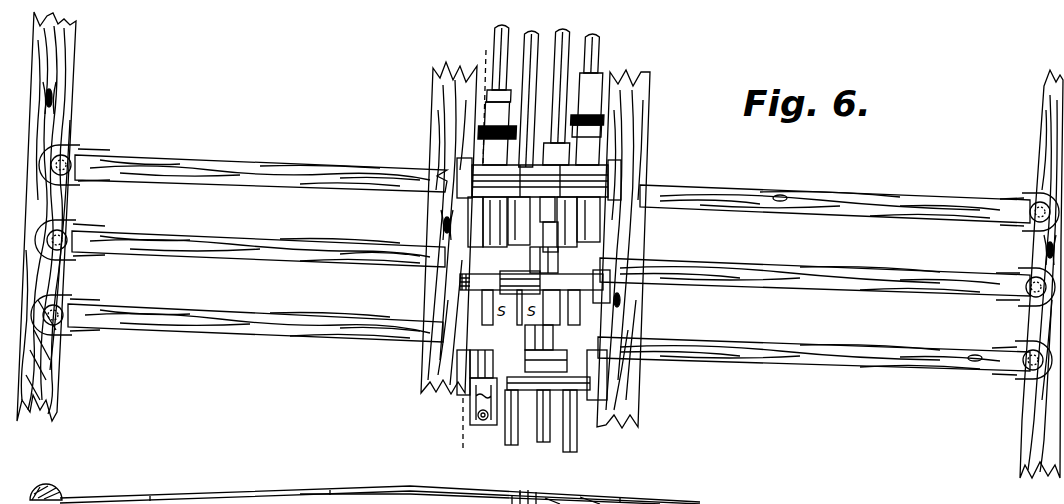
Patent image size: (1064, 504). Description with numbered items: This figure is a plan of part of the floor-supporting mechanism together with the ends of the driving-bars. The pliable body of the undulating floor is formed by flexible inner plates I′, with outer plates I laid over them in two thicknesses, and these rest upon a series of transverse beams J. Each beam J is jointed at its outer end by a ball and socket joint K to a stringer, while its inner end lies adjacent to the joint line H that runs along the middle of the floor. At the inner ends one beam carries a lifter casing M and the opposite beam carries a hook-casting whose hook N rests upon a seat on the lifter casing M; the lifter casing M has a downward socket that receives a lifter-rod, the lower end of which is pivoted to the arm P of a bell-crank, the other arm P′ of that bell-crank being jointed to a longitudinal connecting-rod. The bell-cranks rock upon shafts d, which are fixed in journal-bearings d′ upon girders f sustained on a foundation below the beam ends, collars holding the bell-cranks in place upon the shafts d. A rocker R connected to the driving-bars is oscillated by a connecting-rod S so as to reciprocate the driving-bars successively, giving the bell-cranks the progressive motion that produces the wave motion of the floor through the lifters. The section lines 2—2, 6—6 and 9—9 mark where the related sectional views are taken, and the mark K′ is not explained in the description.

The ball and socket joint K is at (78, 156).
The transverse beam J is at (216, 162).
The girder f is at (433, 120).
The connecting-rod S is at (568, 63).
The section line 2 is at (472, 252).
The rocker R is at (470, 182).
The lifter casing M is at (545, 258).
The journal-bearing d′ is at (462, 281).
The shaft d is at (640, 296).
The section line 9 is at (418, 305).
The section line 6 is at (418, 386).
The bell-crank arm P′ is at (470, 397).
The bell-crank arm P is at (482, 420).
The outer floor-plate I is at (200, 497).
The inner floor-plate I′ is at (234, 498).
The hinge K′ is at (31, 485).
The joint line H is at (529, 490).
The hook N is at (520, 490).